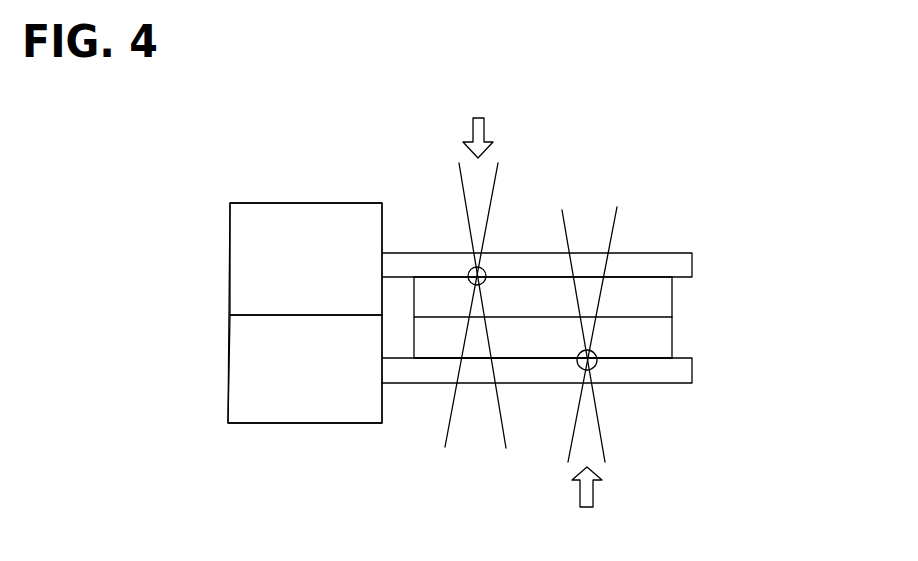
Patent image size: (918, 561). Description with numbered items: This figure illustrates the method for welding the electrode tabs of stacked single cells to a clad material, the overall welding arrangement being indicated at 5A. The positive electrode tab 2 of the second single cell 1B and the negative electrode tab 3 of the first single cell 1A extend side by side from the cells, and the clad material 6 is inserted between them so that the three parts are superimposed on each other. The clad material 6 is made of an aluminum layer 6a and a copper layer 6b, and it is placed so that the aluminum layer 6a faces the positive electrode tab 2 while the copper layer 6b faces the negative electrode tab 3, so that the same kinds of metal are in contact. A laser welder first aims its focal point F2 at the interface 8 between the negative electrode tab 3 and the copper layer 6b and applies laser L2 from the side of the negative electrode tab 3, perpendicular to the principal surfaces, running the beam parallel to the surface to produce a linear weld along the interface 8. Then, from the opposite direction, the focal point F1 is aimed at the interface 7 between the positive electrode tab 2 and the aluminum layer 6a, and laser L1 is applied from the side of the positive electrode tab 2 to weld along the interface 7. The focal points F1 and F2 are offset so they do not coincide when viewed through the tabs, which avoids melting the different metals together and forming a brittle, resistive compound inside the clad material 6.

The sensor head unit 5A is at (226, 186).
The second single cell 1B is at (240, 268).
The first single cell 1A is at (243, 375).
The positive electrode tab 2 is at (683, 270).
The negative electrode tab 3 is at (682, 373).
The clad material 6 is at (628, 317).
The aluminum layer 6a is at (655, 298).
The copper layer 6b is at (657, 328).
The interface 7 is at (660, 283).
The interface 8 is at (660, 355).
The focal point F1 is at (483, 262).
The focal point F2 is at (591, 368).
The laser L1 is at (478, 122).
The laser L2 is at (587, 502).